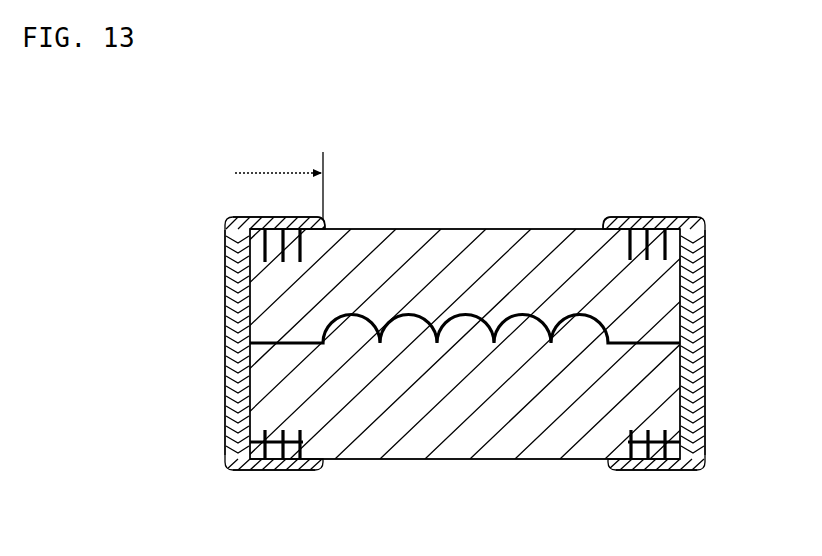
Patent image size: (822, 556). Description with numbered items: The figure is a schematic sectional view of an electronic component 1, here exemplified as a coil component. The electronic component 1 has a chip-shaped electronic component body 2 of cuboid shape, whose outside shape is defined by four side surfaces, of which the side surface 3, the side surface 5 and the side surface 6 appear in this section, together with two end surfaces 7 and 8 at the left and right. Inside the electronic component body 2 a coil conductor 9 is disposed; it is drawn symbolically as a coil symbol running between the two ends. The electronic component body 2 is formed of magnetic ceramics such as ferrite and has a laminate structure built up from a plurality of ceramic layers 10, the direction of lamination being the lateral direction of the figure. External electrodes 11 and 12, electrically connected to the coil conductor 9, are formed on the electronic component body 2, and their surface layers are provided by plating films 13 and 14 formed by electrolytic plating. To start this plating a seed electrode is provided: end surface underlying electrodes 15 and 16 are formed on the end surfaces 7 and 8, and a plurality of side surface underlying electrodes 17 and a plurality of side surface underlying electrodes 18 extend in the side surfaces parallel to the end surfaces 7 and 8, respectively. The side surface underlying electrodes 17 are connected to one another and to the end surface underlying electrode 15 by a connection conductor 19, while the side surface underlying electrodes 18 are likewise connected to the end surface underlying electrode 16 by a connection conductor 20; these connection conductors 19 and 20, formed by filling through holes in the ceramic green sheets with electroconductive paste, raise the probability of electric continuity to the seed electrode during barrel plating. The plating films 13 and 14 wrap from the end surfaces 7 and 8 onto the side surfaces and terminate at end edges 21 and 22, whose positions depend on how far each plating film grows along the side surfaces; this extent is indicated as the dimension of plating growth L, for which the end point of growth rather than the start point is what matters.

The electronic component 1 is at (500, 89).
The electronic component body 2 is at (540, 226).
The side surface 3 is at (432, 229).
The side surface 5 is at (405, 460).
The side surface 6 is at (493, 440).
The end surface 7 is at (238, 314).
The end surface 8 is at (692, 290).
The coil conductor 9 is at (466, 316).
The ceramic layers 10 is at (650, 232).
The external electrode 11 is at (223, 236).
The external electrode 12 is at (708, 228).
The plating film 13 is at (230, 405).
The plating film 14 is at (706, 384).
The end surface underlying electrode 15 is at (240, 468).
The end surface underlying electrode 16 is at (685, 468).
The side surface underlying electrodes 17 is at (305, 458).
The side surface underlying electrodes 18 is at (628, 455).
The connection conductor 19 is at (268, 460).
The connection conductor 20 is at (652, 470).
The end edge 21 is at (326, 228).
The end edge 22 is at (606, 228).
The dimension of plating growth L is at (283, 173).